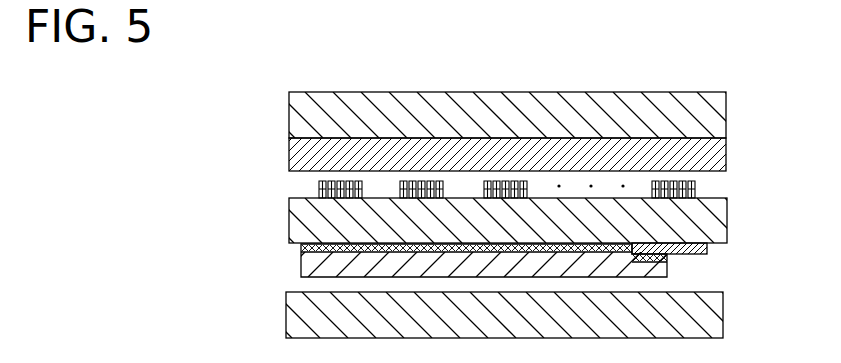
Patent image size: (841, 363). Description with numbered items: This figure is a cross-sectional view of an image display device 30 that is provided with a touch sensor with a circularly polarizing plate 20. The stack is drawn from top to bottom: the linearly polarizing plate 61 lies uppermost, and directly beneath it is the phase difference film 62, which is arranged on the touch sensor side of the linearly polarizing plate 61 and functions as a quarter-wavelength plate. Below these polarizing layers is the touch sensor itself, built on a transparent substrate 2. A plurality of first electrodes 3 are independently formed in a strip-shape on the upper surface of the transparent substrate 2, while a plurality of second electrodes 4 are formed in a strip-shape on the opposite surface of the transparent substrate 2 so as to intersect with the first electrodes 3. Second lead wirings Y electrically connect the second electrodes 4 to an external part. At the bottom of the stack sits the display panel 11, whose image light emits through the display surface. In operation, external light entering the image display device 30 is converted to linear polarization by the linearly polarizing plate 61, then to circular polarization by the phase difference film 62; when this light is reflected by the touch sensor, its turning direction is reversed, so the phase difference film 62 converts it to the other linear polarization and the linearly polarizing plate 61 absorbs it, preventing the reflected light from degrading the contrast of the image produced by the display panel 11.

The image display device 30 is at (207, 139).
The touch sensor with a circularly polarizing plate 20 is at (792, 100).
The linearly polarizing plate 61 is at (685, 111).
The phase difference film 62 is at (697, 152).
The first electrodes 3 is at (697, 185).
The transparent substrate 2 is at (683, 218).
The second lead wirings Y is at (708, 252).
The second electrodes 4 is at (316, 261).
The display panel 11 is at (684, 310).